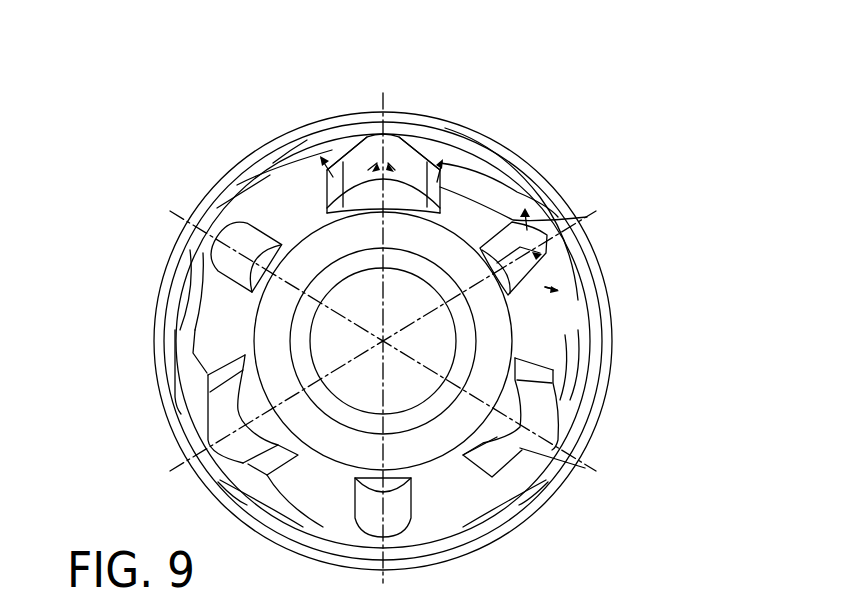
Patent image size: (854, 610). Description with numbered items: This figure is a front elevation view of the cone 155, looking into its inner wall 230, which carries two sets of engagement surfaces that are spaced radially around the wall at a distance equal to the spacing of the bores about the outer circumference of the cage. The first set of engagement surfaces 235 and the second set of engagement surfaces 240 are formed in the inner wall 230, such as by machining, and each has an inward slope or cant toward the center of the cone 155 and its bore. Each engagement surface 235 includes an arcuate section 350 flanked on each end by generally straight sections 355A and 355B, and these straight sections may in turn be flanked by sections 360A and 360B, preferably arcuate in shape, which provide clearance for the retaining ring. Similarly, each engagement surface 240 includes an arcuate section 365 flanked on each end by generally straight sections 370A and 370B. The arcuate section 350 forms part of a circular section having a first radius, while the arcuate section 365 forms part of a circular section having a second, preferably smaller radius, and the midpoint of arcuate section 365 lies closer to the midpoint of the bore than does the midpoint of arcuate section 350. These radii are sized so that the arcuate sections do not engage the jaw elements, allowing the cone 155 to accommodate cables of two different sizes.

The cone 155 is at (592, 186).
The inner wall 230 is at (288, 207).
The first set of engagement surfaces 235 is at (587, 217).
The second set of engagement surfaces 240 is at (217, 277).
The arcuate section 350 is at (393, 140).
The generally straight section 355A is at (350, 140).
The generally straight section 355B is at (440, 124).
The section 360A is at (332, 172).
The section 360B is at (440, 182).
The arcuate section 365 is at (572, 255).
The generally straight section 370A is at (573, 232).
The generally straight section 370B is at (565, 293).